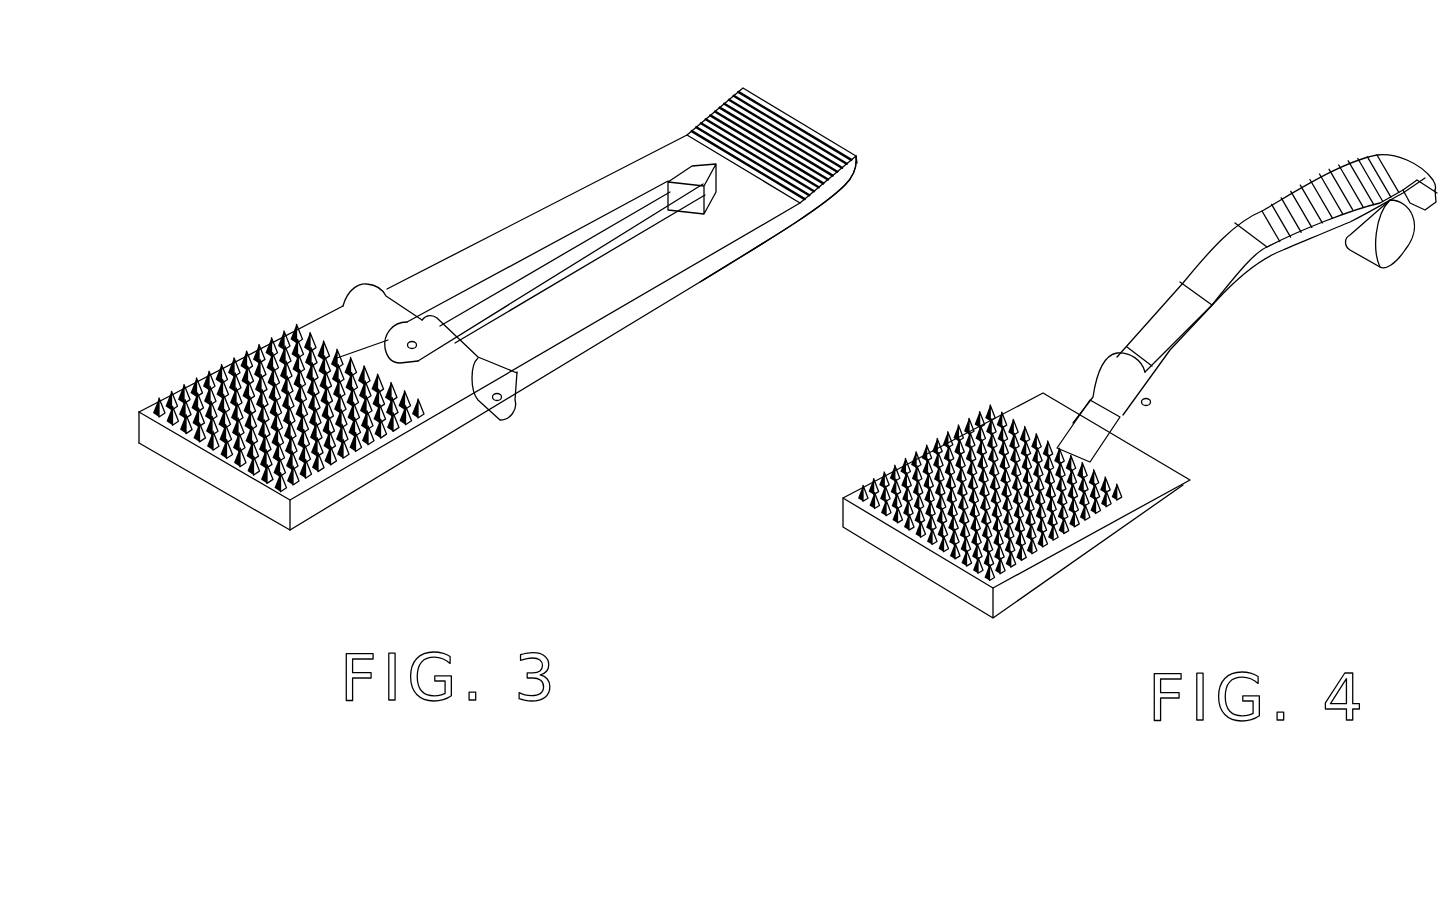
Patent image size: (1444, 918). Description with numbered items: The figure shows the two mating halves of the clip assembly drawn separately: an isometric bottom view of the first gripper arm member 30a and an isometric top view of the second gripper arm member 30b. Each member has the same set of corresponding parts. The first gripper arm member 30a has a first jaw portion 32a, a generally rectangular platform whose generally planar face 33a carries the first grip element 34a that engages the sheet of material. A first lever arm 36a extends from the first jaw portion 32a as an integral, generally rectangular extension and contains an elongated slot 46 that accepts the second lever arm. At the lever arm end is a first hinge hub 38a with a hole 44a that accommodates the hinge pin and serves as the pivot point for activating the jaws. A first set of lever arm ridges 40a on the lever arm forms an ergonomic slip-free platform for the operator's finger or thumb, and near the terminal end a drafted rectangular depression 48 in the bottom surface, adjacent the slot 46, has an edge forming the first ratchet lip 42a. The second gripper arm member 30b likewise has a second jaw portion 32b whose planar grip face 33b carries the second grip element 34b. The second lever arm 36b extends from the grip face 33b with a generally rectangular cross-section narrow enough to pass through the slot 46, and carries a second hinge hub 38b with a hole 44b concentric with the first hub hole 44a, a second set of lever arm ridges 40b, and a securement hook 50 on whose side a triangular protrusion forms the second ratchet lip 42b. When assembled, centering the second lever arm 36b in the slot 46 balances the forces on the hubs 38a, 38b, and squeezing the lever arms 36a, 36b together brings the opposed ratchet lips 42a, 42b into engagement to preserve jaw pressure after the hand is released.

In FIG. 3, the first gripper arm member 30a is at (600, 412).
In FIG. 3, the first jaw portion 32a is at (312, 507).
In FIG. 3, the generally planar face 33a is at (432, 393).
In FIG. 3, the first grip element 34a is at (383, 455).
In FIG. 3, the first lever arm portion 36a is at (563, 323).
In FIG. 3, the first hinge hub 38a is at (467, 352).
In FIG. 3, the first set of lever arm ridges 40a is at (738, 90).
In FIG. 3, the first ratchet lip 42a is at (680, 160).
In FIG. 3, the hole 44a is at (500, 400).
In FIG. 3, the elongated slot 46 is at (618, 247).
In FIG. 3, the drafted rectangular depression 48 is at (668, 182).
In FIG. 4, the second gripper arm member 30b is at (1303, 527).
In FIG. 4, the second jaw portion 32b is at (1070, 558).
In FIG. 4, the generally planar face 33b is at (1137, 477).
In FIG. 4, the second grip element 34b is at (910, 463).
In FIG. 4, the second lever arm portion 36b is at (1230, 300).
In FIG. 4, the second hinge hub 38b is at (1113, 373).
In FIG. 4, the second set of lever arm ridges 40b is at (1317, 177).
In FIG. 4, the second ratchet lip 42b is at (1436, 178).
In FIG. 4, the hole 44b is at (1150, 400).
In FIG. 4, the securement hook 50 is at (1397, 217).